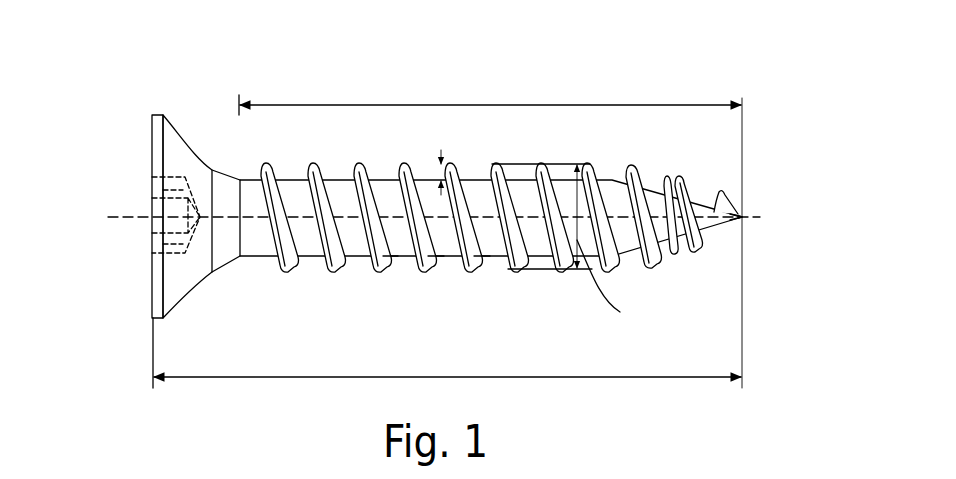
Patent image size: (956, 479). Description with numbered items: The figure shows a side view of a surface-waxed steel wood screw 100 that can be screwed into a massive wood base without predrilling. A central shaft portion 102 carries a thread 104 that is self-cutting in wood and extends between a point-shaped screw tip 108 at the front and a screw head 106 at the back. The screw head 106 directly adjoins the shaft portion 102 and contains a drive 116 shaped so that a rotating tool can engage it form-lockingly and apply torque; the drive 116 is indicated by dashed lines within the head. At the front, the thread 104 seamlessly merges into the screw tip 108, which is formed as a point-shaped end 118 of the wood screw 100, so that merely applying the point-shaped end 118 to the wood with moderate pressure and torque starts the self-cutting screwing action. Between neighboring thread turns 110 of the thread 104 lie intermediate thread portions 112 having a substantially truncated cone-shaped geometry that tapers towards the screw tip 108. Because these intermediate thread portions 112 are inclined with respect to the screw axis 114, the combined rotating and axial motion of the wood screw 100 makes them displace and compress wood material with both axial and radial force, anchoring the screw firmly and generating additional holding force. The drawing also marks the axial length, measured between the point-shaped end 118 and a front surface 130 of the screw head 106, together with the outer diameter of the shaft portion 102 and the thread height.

The wood screw 100 is at (634, 66).
The shaft portion 102 is at (474, 105).
The thread 104 is at (323, 276).
The screw head 106 is at (172, 170).
The screw tip 108 is at (747, 213).
The thread turns 110 is at (402, 167).
The intermediate thread portions 112 is at (496, 258).
The screw axis 114 is at (172, 215).
The drive 116 is at (172, 225).
The point-shaped end 118 is at (746, 220).
The front surface 130 is at (152, 288).